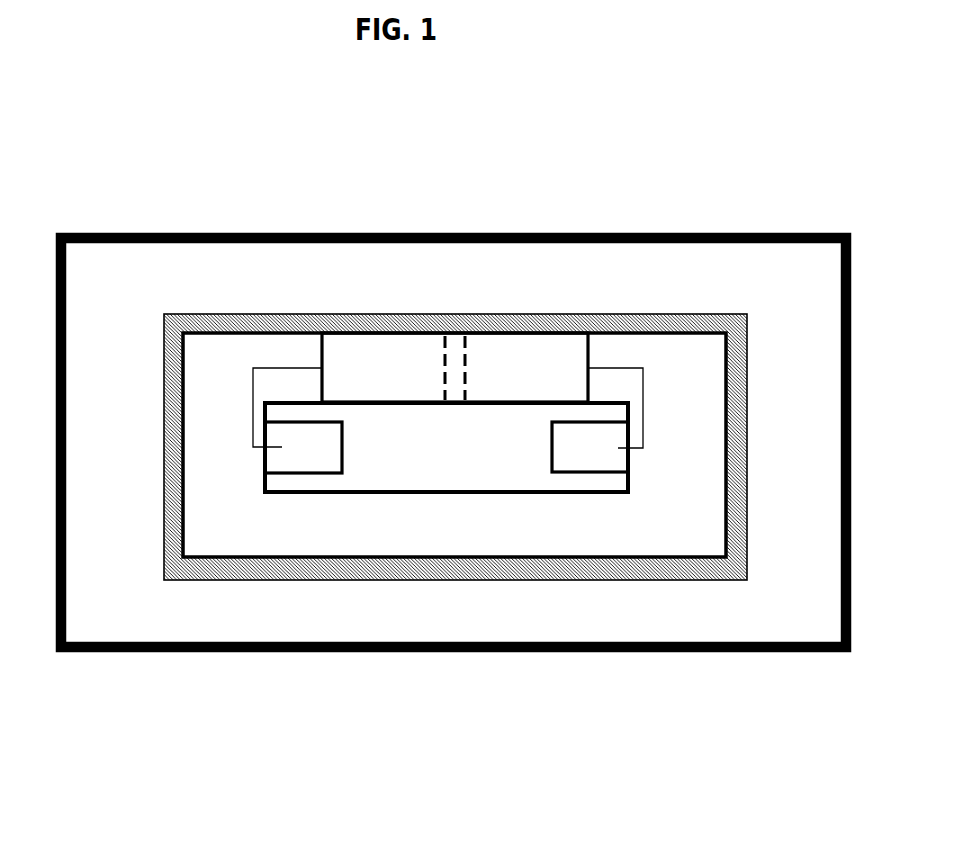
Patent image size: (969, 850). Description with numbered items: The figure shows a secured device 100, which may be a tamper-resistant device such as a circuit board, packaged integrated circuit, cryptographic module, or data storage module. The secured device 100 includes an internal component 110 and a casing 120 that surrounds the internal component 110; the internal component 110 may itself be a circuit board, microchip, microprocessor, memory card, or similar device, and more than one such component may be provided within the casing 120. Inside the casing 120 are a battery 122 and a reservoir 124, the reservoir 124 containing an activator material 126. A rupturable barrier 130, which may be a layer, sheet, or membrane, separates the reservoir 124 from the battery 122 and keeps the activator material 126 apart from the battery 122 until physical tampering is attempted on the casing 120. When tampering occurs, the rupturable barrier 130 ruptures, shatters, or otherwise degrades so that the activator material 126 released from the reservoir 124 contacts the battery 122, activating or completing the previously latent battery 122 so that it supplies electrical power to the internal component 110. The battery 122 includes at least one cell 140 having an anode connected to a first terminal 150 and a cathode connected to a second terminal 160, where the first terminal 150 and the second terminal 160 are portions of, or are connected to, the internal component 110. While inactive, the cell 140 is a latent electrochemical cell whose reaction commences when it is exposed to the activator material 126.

The secured device 100 is at (85, 147).
The internal component 110 is at (446, 447).
The casing 120 is at (423, 650).
The battery 122 is at (454, 445).
The reservoir 124 is at (706, 275).
The activator material 126 is at (665, 608).
The rupturable barrier 130 is at (187, 567).
The cell 140 is at (422, 358).
The first terminal 150 is at (597, 420).
The second terminal 160 is at (297, 420).